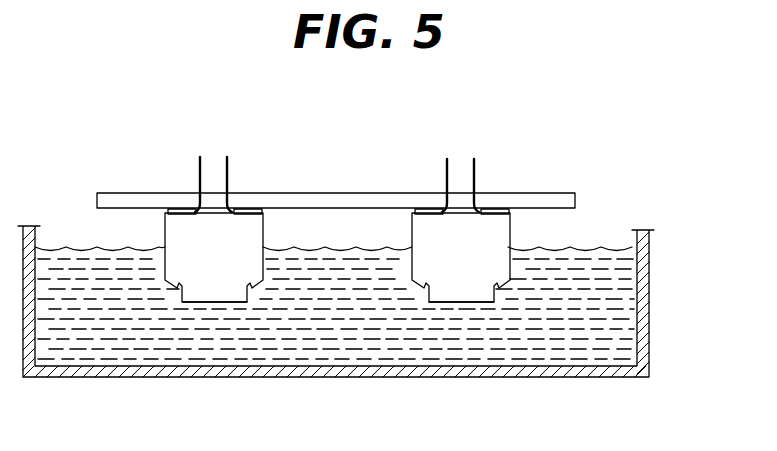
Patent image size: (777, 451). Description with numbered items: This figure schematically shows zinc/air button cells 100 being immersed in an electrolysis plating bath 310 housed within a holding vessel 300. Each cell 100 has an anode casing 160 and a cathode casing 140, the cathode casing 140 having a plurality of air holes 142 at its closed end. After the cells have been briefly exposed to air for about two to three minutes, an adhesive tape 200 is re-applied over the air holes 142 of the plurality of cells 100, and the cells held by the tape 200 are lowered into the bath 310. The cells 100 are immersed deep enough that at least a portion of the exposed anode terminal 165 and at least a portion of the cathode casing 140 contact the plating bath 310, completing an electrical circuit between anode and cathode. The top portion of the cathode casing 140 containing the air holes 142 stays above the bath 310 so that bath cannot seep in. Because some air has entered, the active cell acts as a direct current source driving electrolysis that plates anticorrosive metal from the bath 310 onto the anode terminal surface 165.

The zinc/air cell 100 is at (165, 237).
The cathode casing 140 is at (263, 230).
The air holes 142 is at (337, 173).
The anode casing 160 is at (250, 294).
The exposed negative terminal surface 165 is at (195, 302).
The adhesive tape 200 is at (558, 193).
The holding vessel 300 is at (649, 298).
The plating bath 310 is at (615, 332).